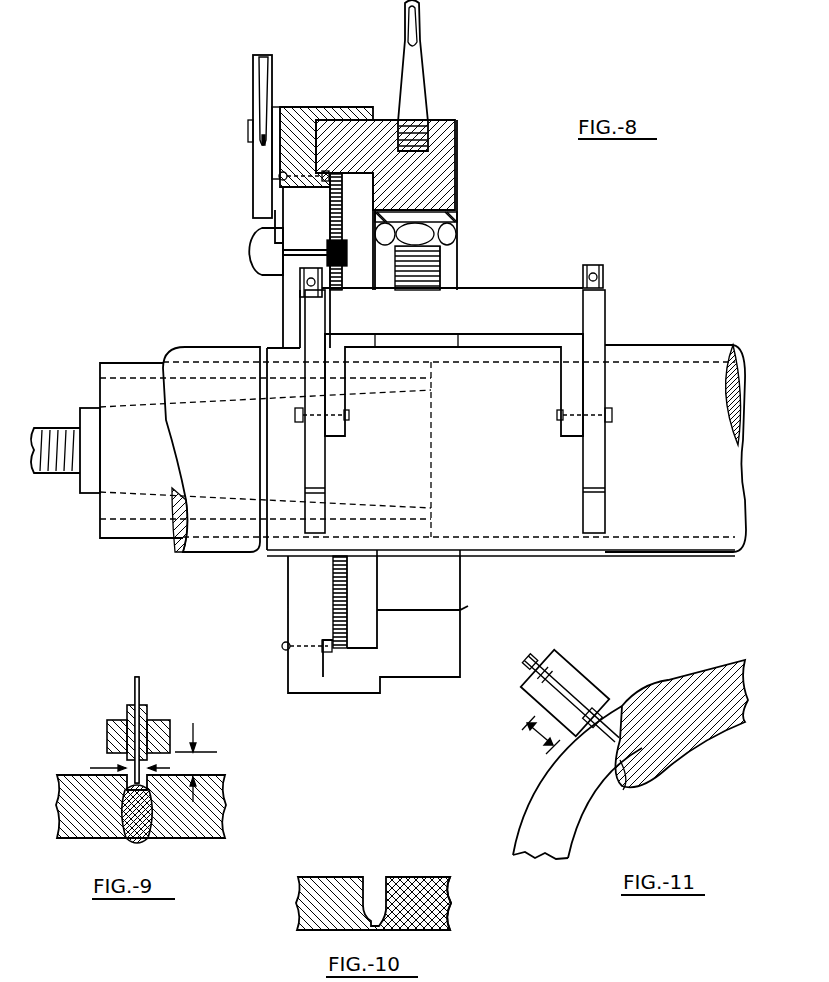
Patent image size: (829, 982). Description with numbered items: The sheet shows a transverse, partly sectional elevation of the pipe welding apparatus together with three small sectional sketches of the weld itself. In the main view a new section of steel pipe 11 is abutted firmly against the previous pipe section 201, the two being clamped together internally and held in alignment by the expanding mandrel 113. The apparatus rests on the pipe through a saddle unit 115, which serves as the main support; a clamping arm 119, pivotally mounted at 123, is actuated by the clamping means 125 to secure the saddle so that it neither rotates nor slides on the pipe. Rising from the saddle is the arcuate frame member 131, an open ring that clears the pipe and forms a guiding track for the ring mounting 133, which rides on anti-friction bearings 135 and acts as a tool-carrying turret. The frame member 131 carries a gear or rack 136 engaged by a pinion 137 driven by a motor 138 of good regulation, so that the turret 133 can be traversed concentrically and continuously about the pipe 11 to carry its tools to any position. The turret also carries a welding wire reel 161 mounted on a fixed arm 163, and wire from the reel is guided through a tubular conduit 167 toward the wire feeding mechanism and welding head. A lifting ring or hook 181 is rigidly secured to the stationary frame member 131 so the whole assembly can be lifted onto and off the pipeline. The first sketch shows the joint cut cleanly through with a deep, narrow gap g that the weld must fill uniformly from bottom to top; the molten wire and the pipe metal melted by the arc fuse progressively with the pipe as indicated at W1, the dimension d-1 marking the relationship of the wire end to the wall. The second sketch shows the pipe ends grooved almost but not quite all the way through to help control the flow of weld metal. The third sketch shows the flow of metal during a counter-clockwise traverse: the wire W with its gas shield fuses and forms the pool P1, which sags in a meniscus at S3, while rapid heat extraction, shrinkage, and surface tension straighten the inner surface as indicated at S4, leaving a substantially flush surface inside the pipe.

In FIG. 8, the steel pipe 11 is at (215, 352).
In FIG. 8, the internally expanding mandrel 113 is at (124, 365).
In FIG. 8, the saddle unit 115 is at (490, 300).
In FIG. 8, the clamping arm 119 is at (324, 478).
In FIG. 8, the pivot 123 is at (298, 422).
In FIG. 8, the clamping arm actuating means 125 is at (300, 283).
In FIG. 8, the arcuate frame member 131 is at (448, 142).
In FIG. 8, the ring mounting 133 is at (330, 107).
In FIG. 8, the anti-friction bearings 135 is at (326, 188).
In FIG. 8, the gear or rack 136 is at (331, 226).
In FIG. 8, the pinion 137 is at (347, 262).
In FIG. 8, the motor 138 is at (262, 252).
In FIG. 8, the welding wire reel 161 is at (258, 170).
In FIG. 8, the fixed arm 163 is at (280, 111).
In FIG. 8, the tubular conduit 167 is at (262, 98).
In FIG. 8, the lifting ring or hook 181 is at (418, 65).
In FIG. 8, the previous pipe section 201 is at (655, 346).
In FIG. 9, the wire W is at (134, 690).
In FIG. 11, the wire W is at (538, 660).
In FIG. 9, the fused weld metal W1 is at (150, 840).
In FIG. 9, the gap g is at (123, 769).
In FIG. 9, the distance d-1 is at (196, 762).
In FIG. 11, the distance d-1 is at (577, 760).
In FIG. 11, the pool P1 is at (645, 772).
In FIG. 11, the meniscus S3 is at (630, 783).
In FIG. 11, the straightened inner surface S4 is at (705, 730).